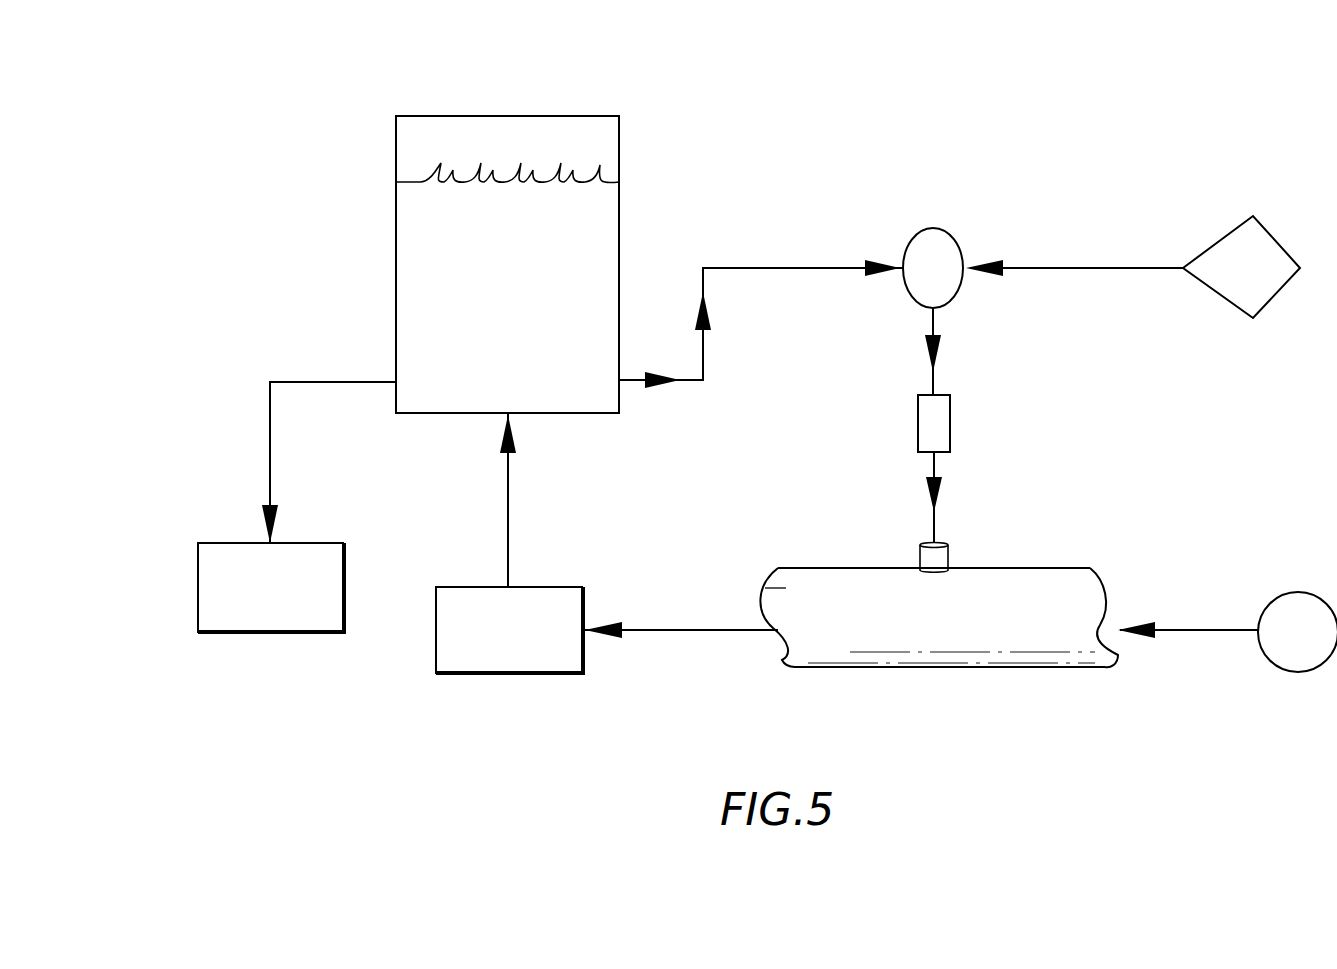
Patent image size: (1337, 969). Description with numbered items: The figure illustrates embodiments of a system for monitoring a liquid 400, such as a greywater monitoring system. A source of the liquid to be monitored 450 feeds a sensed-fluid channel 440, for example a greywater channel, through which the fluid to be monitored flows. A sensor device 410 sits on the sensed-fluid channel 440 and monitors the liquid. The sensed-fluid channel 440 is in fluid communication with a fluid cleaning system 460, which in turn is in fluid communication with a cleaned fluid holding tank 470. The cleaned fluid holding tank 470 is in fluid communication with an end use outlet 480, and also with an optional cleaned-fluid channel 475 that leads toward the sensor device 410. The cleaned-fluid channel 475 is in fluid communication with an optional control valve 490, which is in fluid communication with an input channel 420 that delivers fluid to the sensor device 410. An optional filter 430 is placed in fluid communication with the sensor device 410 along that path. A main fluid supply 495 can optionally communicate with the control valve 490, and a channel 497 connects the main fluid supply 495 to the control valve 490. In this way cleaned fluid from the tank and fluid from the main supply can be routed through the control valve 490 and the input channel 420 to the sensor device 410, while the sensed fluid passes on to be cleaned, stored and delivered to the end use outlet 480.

The system for monitoring a liquid 400 is at (695, 110).
The sensor device 410 is at (943, 557).
The input channel 420 is at (933, 313).
The filter 430 is at (927, 423).
The sensed-fluid channel 440 is at (980, 630).
The source of the liquid to be monitored 450 is at (1282, 618).
The fluid cleaning system 460 is at (514, 660).
The cleaned fluid holding tank 470 is at (422, 220).
The cleaned-fluid channel 475 is at (750, 268).
The end use outlet 480 is at (215, 571).
The control valve 490 is at (943, 254).
The main fluid supply 495 is at (1258, 287).
The channel 497 is at (1138, 268).